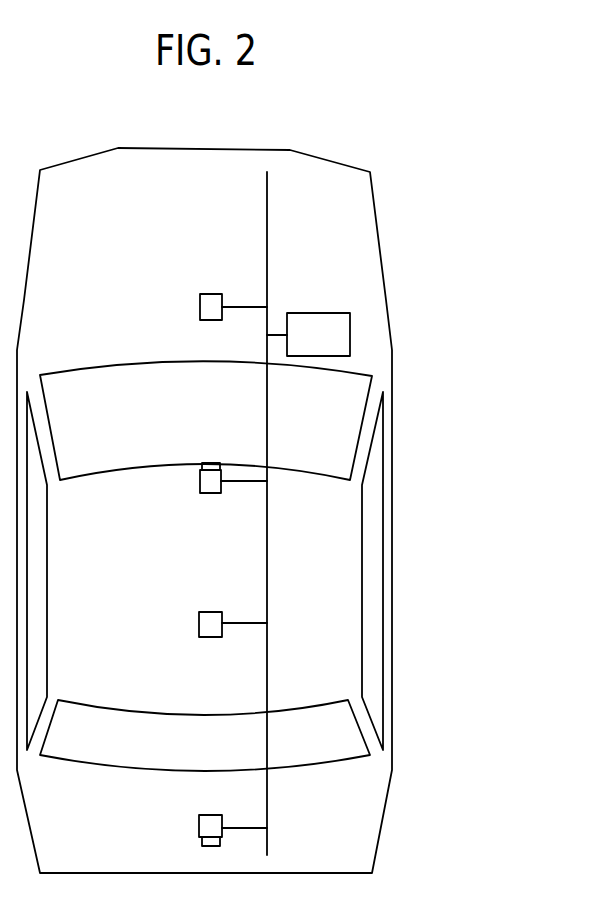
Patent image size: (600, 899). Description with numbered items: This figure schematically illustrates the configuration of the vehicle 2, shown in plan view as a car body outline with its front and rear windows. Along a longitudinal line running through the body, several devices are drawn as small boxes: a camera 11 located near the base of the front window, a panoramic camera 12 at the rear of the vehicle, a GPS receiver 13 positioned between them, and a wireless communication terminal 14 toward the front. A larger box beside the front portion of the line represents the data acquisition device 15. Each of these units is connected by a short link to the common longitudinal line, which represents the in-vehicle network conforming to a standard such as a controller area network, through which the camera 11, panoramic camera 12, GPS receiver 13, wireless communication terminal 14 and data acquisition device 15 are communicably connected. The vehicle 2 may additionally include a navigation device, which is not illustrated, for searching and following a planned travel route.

The vehicle 2 is at (392, 750).
The camera 11 is at (200, 490).
The panoramic camera 12 is at (199, 818).
The GPS receiver 13 is at (200, 632).
The wireless communication terminal 14 is at (200, 311).
The data acquisition device 15 is at (350, 330).